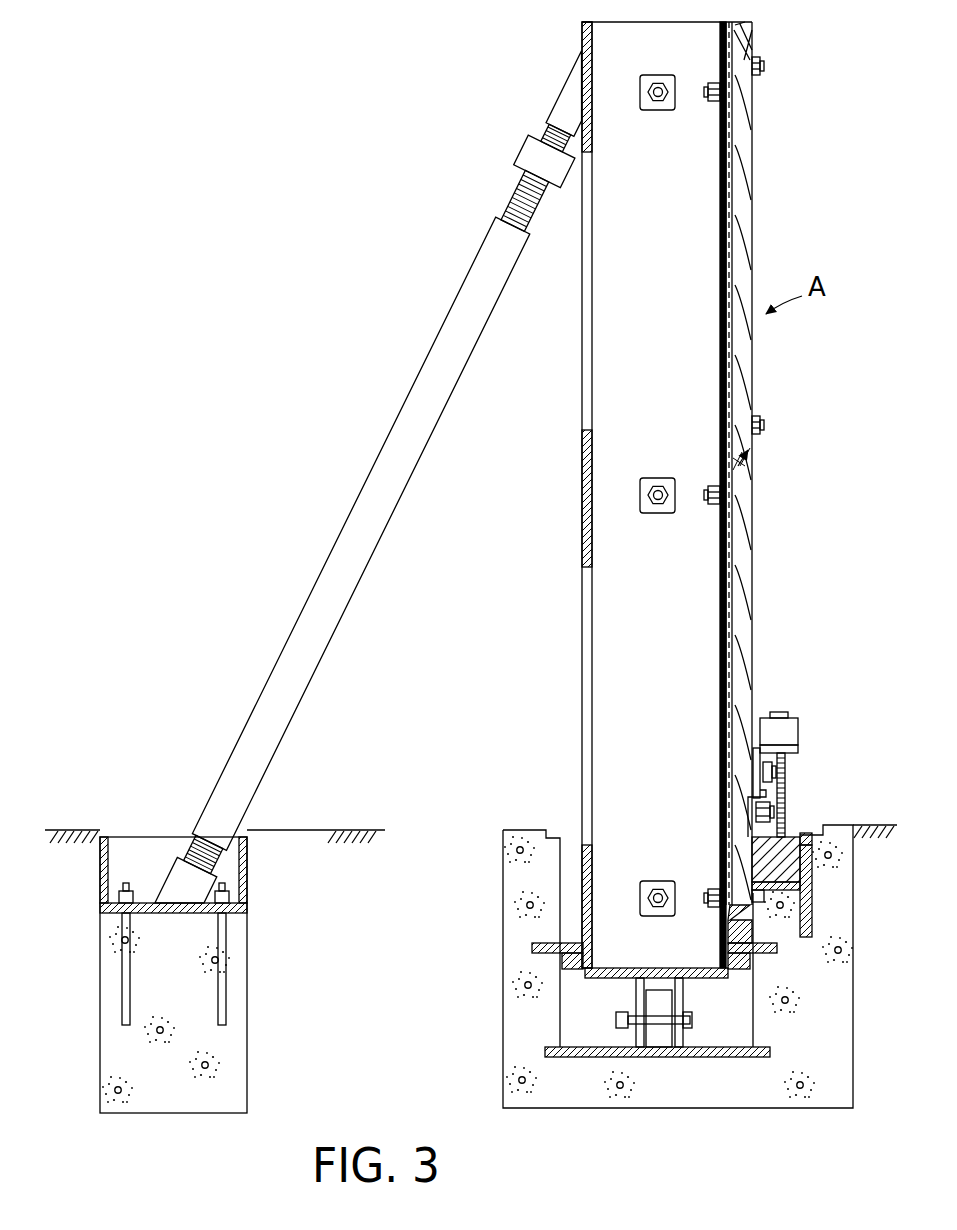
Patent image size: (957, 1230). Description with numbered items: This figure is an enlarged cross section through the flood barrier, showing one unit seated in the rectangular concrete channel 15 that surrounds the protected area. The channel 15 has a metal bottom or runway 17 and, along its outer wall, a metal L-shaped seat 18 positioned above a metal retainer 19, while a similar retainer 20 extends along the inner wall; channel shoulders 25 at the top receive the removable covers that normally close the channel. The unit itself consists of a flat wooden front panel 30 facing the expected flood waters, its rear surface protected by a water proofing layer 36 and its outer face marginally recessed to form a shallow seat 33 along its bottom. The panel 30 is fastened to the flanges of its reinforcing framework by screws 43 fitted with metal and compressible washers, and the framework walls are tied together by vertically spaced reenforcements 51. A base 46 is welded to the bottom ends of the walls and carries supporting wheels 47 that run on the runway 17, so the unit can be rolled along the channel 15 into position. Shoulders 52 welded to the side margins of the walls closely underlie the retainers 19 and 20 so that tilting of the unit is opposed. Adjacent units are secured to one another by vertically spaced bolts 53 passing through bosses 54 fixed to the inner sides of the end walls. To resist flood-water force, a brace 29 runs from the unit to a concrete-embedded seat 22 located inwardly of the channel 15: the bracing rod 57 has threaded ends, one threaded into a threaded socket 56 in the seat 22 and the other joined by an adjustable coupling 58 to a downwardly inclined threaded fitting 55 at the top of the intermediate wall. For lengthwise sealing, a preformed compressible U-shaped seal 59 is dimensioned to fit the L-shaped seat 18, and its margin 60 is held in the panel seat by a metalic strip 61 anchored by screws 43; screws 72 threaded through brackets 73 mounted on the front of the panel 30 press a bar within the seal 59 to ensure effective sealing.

The concrete channel 15 is at (578, 844).
The runway 17 is at (598, 1057).
The L-shaped seat 18 is at (812, 906).
The retainer 19 is at (780, 953).
The retainer 20 is at (545, 950).
The seat 22 is at (140, 862).
The channel shoulders 25 is at (546, 830).
The brace 29 is at (384, 484).
The front panel 30 is at (748, 124).
The seat 33 is at (752, 848).
The water proofing layer 36 is at (740, 186).
The screws 43 is at (774, 812).
The base 46 is at (620, 975).
The supporting wheels 47 is at (652, 1012).
The reenforcements 51 is at (582, 36).
The shoulders 52 is at (572, 963).
The bolts 53 is at (658, 104).
The bosses 54 is at (665, 78).
The threaded fitting 55 is at (562, 100).
The threaded socket 56 is at (205, 878).
The bracing rod 57 is at (356, 586).
The adjustable coupling 58 is at (543, 152).
The U-shaped seal 59 is at (808, 856).
The margin 60 is at (750, 866).
The metalic strip 61 is at (754, 815).
The screws 72 is at (786, 769).
The brackets 73 is at (788, 734).